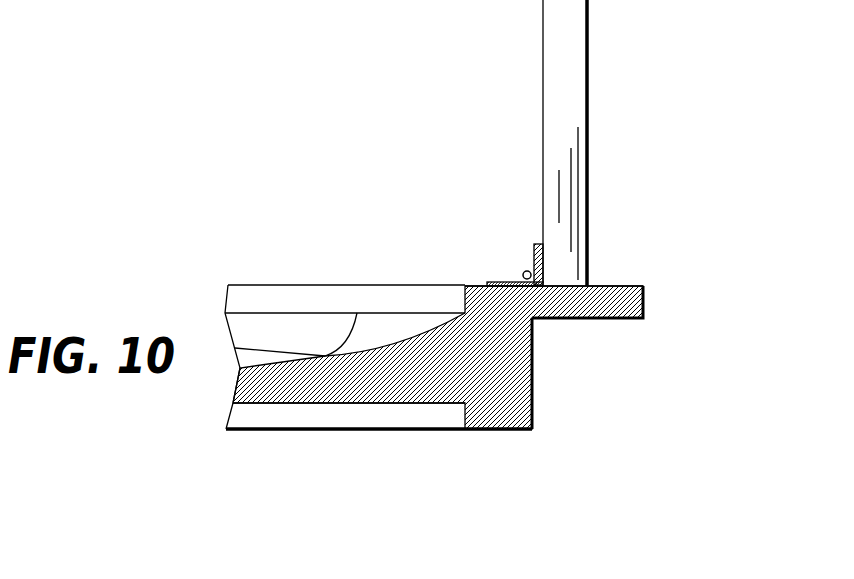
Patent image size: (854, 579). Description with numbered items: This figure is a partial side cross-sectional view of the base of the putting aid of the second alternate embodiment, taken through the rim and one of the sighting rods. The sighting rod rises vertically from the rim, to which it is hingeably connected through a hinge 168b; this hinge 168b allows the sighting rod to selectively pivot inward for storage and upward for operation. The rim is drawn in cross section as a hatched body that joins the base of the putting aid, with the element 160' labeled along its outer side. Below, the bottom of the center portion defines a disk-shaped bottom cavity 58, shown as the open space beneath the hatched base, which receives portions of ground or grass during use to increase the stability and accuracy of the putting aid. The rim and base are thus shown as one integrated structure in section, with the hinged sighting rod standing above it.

The hinge 168b is at (535, 258).
The support body 160' is at (473, 357).
The bottom cavity 58 is at (270, 417).